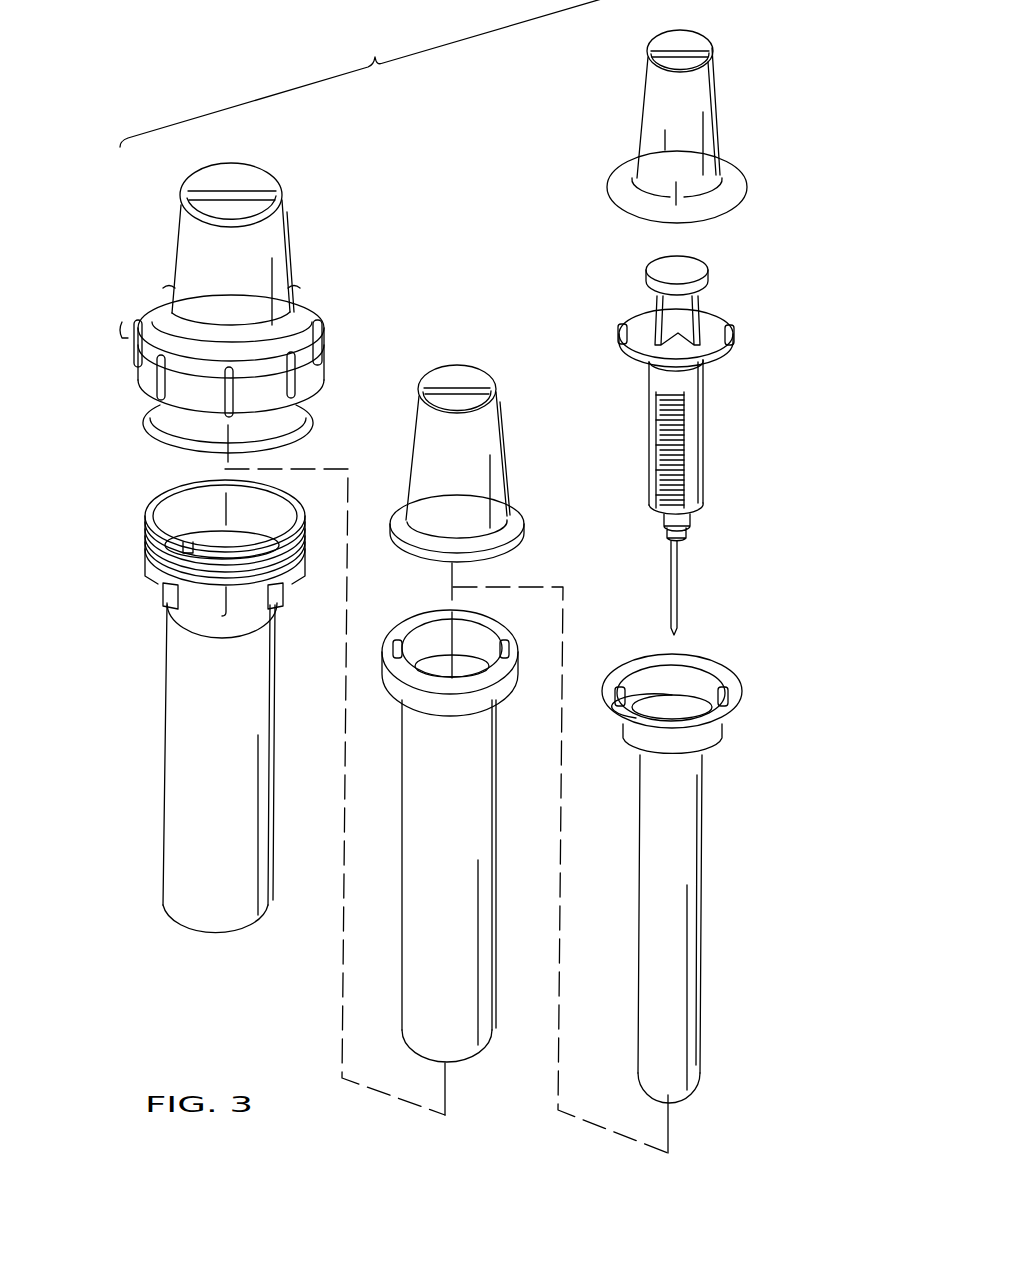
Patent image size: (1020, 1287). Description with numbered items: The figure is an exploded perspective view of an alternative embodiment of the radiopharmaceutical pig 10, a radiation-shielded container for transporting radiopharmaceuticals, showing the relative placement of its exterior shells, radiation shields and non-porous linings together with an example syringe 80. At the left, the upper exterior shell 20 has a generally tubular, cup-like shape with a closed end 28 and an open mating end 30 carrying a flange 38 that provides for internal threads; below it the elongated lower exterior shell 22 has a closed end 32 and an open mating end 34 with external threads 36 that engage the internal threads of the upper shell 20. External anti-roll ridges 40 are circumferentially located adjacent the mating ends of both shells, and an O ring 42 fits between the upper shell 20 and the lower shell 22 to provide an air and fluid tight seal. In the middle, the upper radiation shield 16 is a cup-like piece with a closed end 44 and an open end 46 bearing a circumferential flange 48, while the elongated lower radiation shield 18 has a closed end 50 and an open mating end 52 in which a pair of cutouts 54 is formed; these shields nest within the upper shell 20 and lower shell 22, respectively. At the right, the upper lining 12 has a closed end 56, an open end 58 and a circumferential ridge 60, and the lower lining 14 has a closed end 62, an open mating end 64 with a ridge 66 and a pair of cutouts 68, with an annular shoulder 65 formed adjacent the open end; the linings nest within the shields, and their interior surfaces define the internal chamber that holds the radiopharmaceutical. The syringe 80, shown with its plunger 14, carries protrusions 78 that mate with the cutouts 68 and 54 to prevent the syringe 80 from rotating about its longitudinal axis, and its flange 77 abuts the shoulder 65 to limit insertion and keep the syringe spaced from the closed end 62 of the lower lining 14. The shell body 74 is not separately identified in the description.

The radiopharmaceutical pig 10 is at (371, 73).
The upper lining 12 is at (705, 92).
The lower lining 14 is at (681, 683).
The upper radiation shield 16 is at (486, 474).
The lower radiation shield 18 is at (456, 834).
The upper exterior shell 20 is at (241, 307).
The lower exterior shell 22 is at (188, 726).
The closed end 28 is at (262, 192).
The open mating end 30 is at (261, 343).
The closed end 32 is at (180, 935).
The open mating end 34 is at (168, 493).
The external threads 36 is at (142, 545).
The flange 38 is at (305, 302).
The anti-roll ridges 40 is at (134, 332).
The O ring 42 is at (308, 425).
The closed end 44 is at (468, 382).
The open end 46 is at (512, 550).
The circumferential flange 48 is at (518, 512).
The closed end 50 is at (482, 1060).
The open mating end 52 is at (412, 619).
The cutouts 54 is at (508, 649).
The closed end 56 is at (687, 40).
The open end 58 is at (698, 138).
The circumferential ridge 60 is at (733, 178).
The closed end 62 is at (695, 1096).
The open mating end 64 is at (654, 704).
The annular shoulder 65 is at (692, 705).
The ridge 66 is at (718, 672).
The cutouts 68 is at (618, 701).
The cap body 74 is at (211, 239).
The flange 77 is at (708, 320).
The protrusions 78 is at (618, 336).
The syringe 80 is at (680, 583).